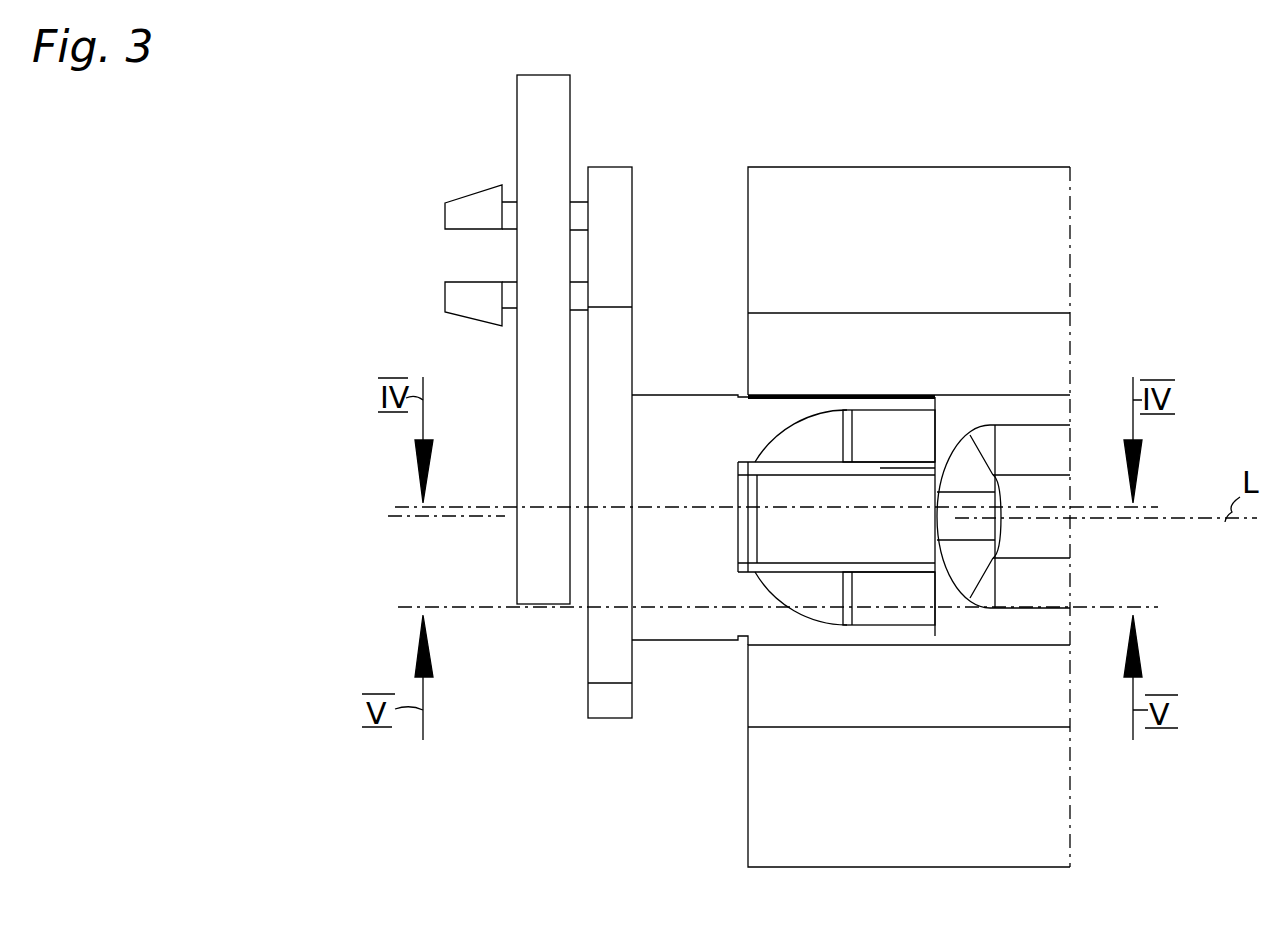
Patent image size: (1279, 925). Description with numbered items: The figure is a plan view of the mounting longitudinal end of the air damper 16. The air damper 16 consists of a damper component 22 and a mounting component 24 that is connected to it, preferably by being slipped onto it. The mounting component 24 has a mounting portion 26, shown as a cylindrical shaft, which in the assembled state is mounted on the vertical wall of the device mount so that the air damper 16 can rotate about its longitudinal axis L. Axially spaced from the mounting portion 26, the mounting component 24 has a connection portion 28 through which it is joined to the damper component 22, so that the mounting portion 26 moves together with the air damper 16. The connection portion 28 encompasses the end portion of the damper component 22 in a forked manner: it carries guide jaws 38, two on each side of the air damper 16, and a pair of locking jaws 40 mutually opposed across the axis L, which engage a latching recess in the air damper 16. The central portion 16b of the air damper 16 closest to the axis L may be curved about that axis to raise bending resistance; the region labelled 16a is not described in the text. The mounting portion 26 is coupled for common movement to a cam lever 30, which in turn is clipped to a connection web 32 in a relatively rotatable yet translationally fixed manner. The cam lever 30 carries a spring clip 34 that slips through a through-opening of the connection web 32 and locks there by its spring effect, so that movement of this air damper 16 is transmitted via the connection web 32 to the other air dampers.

The air damper 16 is at (746, 803).
The housing lower part 16a is at (809, 656).
The central portion 16b is at (1070, 540).
The damper component 22 is at (887, 190).
The mounting component 24 is at (776, 303).
The mounting portion 26 is at (680, 430).
The connection portion 28 is at (854, 390).
The cam lever 30 is at (612, 218).
The connection web 32 is at (548, 115).
The spring clip 34 is at (458, 217).
The guide jaw 38 is at (905, 445).
The locking jaw 40 is at (905, 551).